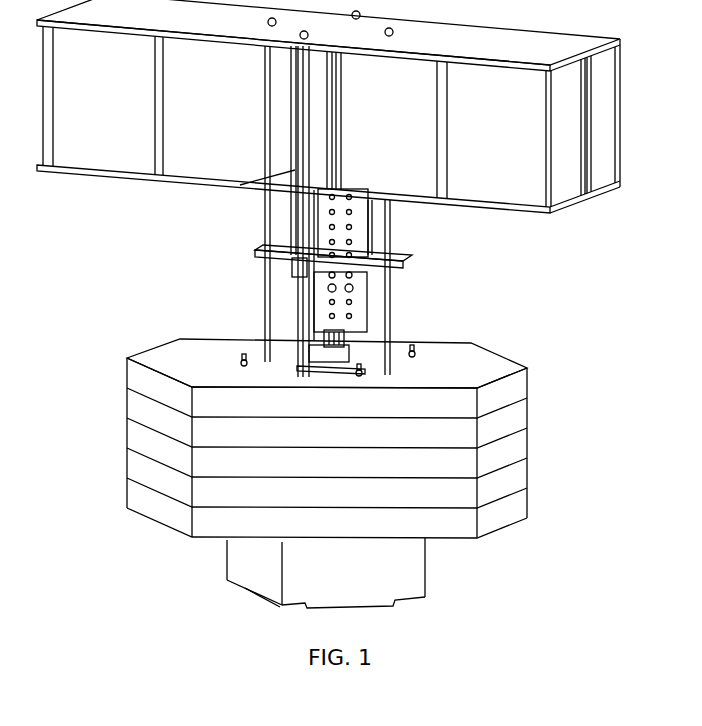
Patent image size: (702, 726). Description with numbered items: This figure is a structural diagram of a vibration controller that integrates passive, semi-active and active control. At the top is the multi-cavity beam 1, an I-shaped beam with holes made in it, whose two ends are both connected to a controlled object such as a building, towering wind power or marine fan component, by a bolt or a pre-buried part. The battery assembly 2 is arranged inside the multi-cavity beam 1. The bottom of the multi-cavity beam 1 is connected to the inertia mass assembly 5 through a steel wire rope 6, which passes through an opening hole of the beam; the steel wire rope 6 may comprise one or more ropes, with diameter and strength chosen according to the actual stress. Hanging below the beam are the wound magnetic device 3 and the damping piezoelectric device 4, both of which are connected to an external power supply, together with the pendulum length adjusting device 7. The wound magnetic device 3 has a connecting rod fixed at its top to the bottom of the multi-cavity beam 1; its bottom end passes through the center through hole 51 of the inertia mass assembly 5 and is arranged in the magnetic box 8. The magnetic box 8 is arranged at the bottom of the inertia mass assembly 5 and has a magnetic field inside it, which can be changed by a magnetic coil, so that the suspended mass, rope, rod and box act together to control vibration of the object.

The multi-cavity beam 1 is at (556, 53).
The battery assembly 2 is at (520, 128).
The wound magnetic device 3 is at (300, 337).
The damping piezoelectric device 4 is at (351, 340).
The inertia mass assembly 5 is at (511, 447).
The center through hole 51 is at (300, 363).
The steel wire rope 6 is at (270, 295).
The pendulum length adjusting device 7 is at (359, 232).
The magnetic box 8 is at (413, 580).